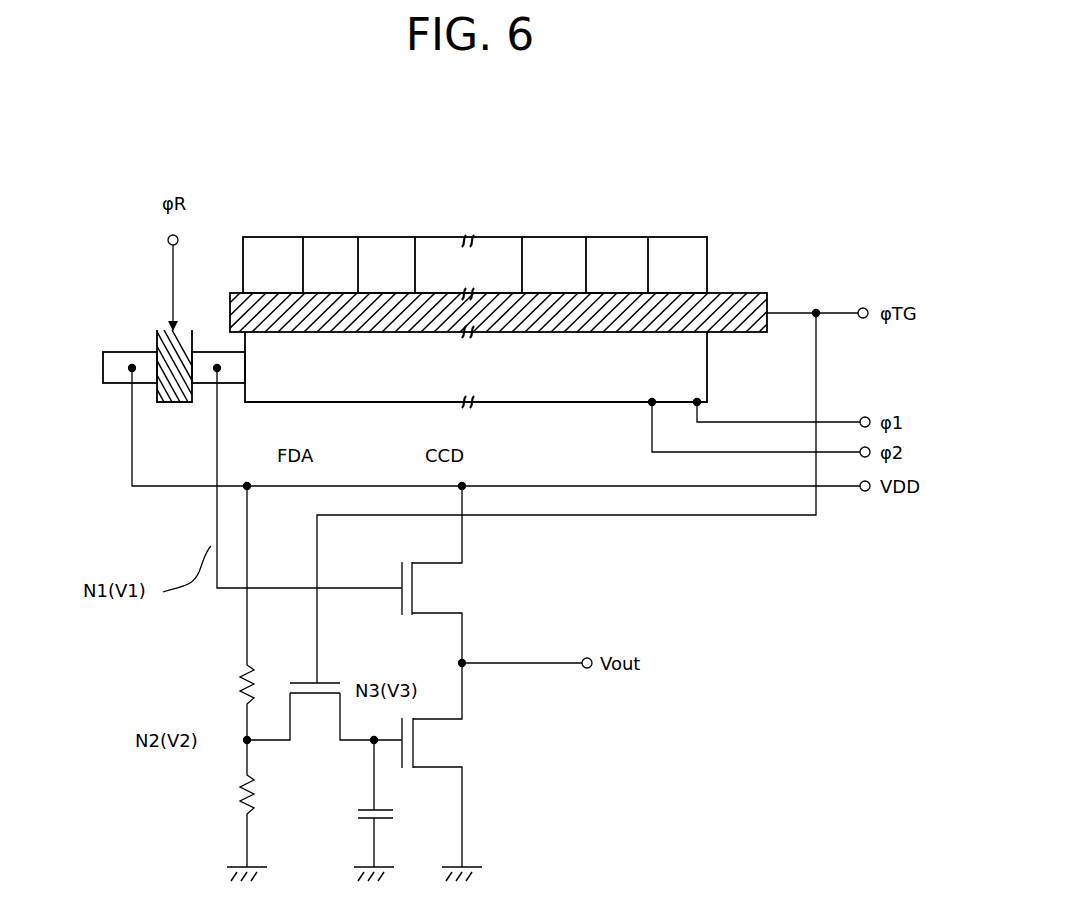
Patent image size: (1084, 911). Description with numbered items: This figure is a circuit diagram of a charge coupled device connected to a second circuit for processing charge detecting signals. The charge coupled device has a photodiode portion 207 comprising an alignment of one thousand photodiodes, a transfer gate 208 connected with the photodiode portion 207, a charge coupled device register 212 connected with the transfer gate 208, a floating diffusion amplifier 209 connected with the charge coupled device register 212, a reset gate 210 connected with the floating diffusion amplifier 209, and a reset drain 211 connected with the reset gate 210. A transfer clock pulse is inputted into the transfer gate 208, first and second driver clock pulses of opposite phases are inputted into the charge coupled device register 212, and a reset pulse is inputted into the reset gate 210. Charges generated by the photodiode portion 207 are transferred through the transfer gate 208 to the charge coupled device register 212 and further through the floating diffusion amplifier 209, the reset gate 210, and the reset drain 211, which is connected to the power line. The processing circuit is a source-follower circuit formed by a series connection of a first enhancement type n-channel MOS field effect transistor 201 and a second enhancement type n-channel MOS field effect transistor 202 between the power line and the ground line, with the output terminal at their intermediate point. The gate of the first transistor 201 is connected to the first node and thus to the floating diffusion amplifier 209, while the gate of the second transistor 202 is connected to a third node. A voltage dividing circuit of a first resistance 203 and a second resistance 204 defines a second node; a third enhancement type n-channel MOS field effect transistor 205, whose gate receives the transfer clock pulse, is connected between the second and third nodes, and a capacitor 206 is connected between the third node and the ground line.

The first enhancement type n-channel MOS field effect transistor 201 is at (450, 574).
The second enhancement type n-channel MOS field effect transistor 202 is at (436, 765).
The first resistance 203 is at (222, 613).
The second resistance 204 is at (222, 803).
The third enhancement type n-channel MOS field effect transistor 205 is at (310, 717).
The capacitor 206 is at (355, 803).
The photodiode portion 207 is at (554, 235).
The transfer gate 208 is at (732, 279).
The floating diffusion amplifier FDA 209 is at (225, 391).
The reset gate 210 is at (190, 322).
The reset drain 211 is at (122, 349).
The charge coupled device register 212 is at (356, 416).